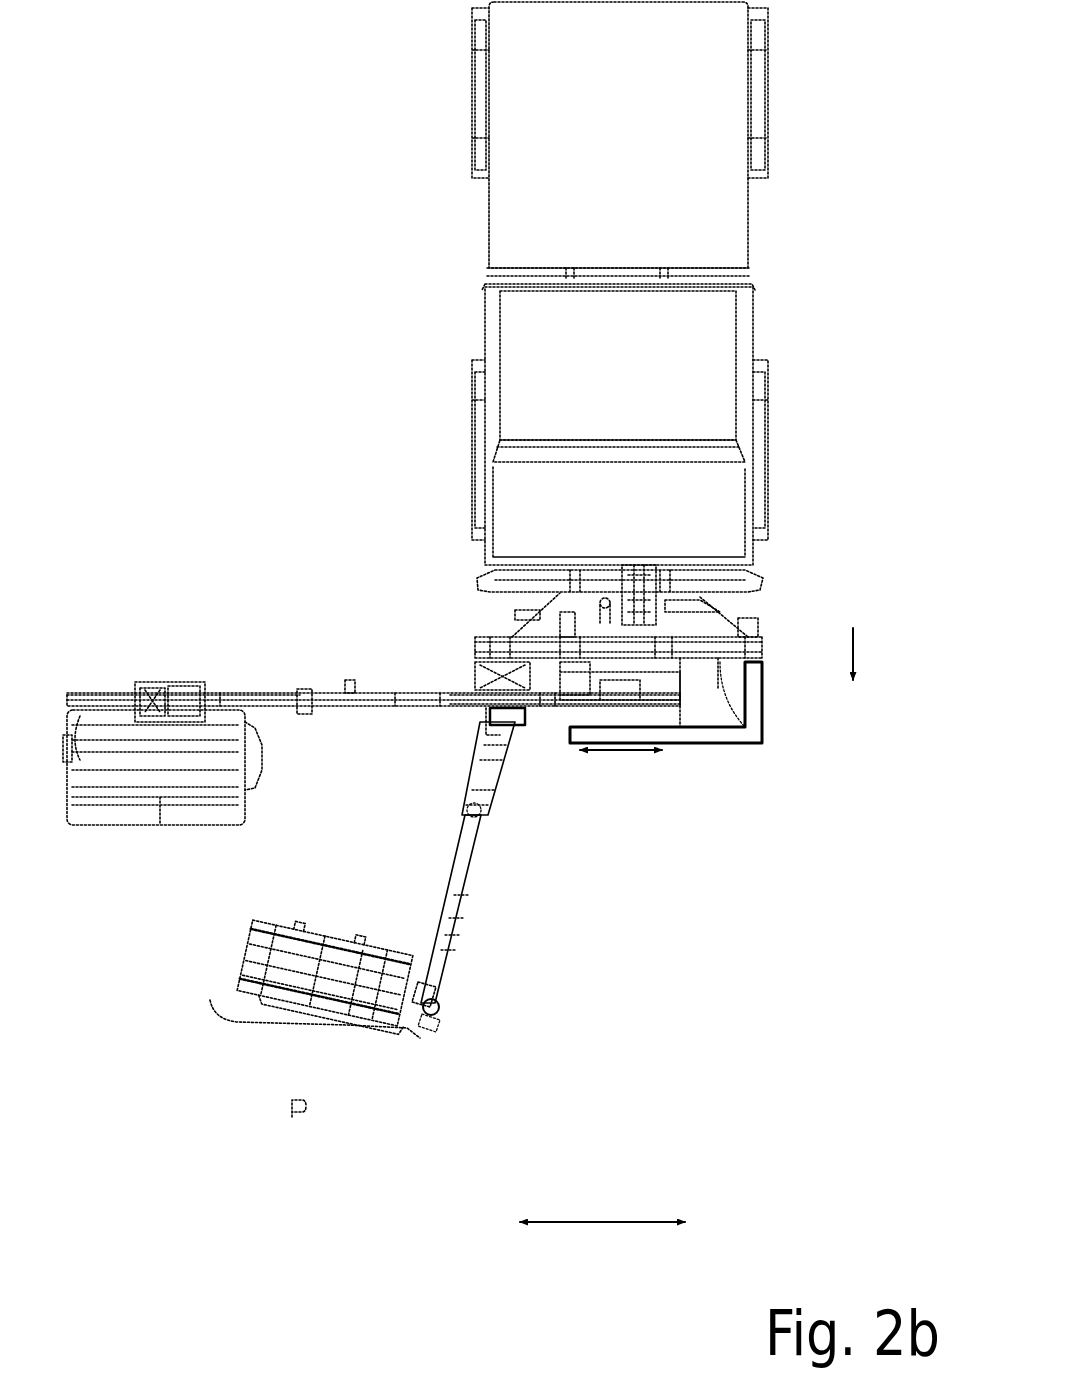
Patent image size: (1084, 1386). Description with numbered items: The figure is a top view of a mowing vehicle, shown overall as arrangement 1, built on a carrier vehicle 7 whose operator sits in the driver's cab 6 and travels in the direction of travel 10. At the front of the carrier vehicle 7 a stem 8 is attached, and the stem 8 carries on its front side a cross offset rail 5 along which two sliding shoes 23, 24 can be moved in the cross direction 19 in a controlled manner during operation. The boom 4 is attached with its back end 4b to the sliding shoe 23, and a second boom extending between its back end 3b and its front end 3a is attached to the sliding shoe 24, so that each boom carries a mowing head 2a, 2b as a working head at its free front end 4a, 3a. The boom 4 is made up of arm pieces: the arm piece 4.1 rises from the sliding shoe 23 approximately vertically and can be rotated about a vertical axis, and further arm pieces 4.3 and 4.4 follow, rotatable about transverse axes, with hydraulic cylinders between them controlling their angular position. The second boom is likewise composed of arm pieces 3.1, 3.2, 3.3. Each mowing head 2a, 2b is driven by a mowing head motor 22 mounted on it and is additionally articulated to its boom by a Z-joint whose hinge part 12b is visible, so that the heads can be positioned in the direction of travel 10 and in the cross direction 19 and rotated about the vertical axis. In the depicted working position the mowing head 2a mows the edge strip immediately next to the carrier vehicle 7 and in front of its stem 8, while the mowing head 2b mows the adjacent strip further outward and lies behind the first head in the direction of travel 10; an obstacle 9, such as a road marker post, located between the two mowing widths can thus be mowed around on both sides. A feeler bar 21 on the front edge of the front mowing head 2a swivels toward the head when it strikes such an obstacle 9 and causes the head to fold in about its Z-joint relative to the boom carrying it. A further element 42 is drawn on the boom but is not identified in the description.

The vehicle with loading system 1 is at (283, 489).
The mowing head 2a is at (218, 948).
The mowing head 2b is at (264, 790).
The front end 3a is at (460, 988).
The back end 3b is at (526, 727).
The arm piece 3.1 is at (482, 760).
The arm piece 3.2 is at (466, 870).
The arm piece 3.3 is at (427, 996).
The boom 4 is at (335, 624).
The front end 4a is at (228, 652).
The back end 4b is at (622, 700).
The arm piece 4.1 is at (548, 706).
The arm piece 4.3 is at (255, 693).
The arm piece 4.4 is at (140, 685).
The cross offset rail 5 is at (748, 712).
The driver's cab 6 is at (670, 383).
The carrier vehicle 7 is at (797, 82).
The stem 8 is at (718, 623).
The obstacle 9 is at (296, 1118).
The direction of travel 10 is at (854, 648).
The hinge part 12b is at (170, 690).
The cross direction 19 is at (584, 1222).
The feeler bar 21 is at (210, 1001).
The mowing head motor 22 is at (436, 1022).
The sliding shoe 23 is at (640, 685).
The sliding shoe 24 is at (488, 690).
The arm guide element 42 is at (397, 693).